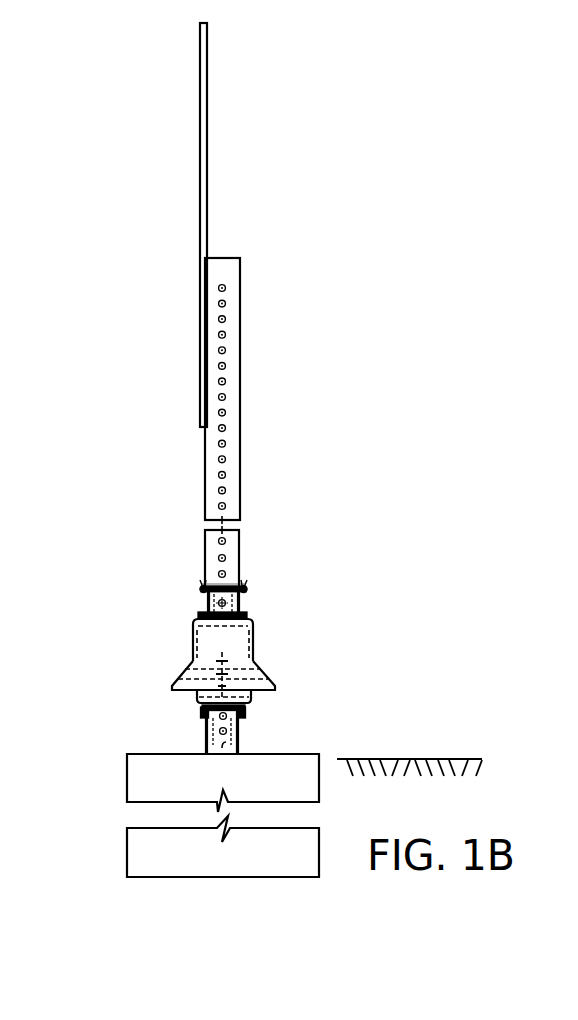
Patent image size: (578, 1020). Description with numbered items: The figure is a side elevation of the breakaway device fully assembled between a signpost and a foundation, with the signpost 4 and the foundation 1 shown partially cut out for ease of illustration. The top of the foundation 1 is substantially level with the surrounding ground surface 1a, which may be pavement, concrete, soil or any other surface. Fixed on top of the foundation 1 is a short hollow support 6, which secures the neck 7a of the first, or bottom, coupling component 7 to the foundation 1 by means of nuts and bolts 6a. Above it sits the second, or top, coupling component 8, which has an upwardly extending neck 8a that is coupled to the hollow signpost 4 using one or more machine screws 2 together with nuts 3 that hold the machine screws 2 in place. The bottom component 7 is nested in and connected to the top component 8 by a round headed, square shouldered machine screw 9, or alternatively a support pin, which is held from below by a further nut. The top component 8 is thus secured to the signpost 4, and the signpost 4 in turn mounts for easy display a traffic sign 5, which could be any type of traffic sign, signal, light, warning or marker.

The foundation 1 is at (127, 773).
The ground surface 1a is at (420, 759).
The machine screw 2 is at (205, 590).
The nut 3 is at (243, 585).
The signpost 4 is at (240, 398).
The traffic sign 5 is at (207, 218).
The hollow support 6 is at (237, 728).
The nuts and bolts 6a is at (203, 714).
The bottom coupling component 7 is at (193, 702).
The neck 7a is at (228, 745).
The top coupling component 8 is at (200, 618).
The upwardly extending neck 8a is at (240, 600).
The machine screw 9 is at (220, 659).